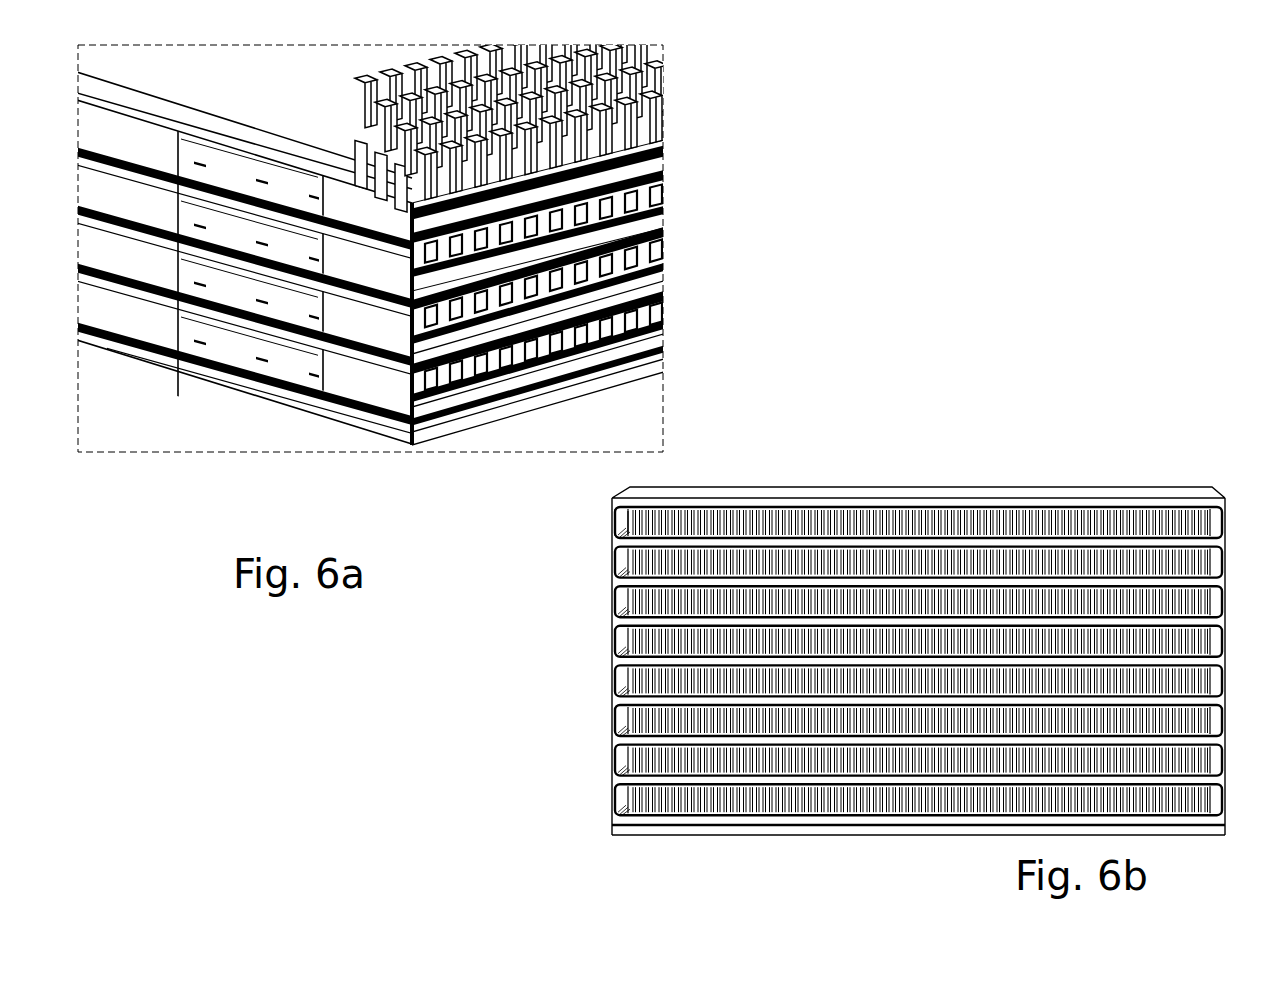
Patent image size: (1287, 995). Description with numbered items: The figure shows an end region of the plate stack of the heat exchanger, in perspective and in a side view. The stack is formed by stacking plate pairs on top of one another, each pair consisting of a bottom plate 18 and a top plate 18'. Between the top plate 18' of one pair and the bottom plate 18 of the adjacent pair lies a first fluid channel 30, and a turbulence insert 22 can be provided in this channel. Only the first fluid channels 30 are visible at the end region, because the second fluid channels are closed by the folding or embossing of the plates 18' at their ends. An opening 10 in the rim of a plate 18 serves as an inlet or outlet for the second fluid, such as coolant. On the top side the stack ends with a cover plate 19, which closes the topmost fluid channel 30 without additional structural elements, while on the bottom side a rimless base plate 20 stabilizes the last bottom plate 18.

In FIG. 6A, the opening 10 is at (242, 337).
In FIG. 6A, the plate 18 is at (244, 327).
In FIG. 6A, the plate 18' is at (593, 270).
In FIG. 6B, the cover plate 19 is at (928, 502).
In FIG. 6A, the base plate 20 is at (457, 432).
In FIG. 6B, the base plate 20 is at (938, 826).
In FIG. 6A, the turbulence insert 22 is at (657, 124).
In FIG. 6B, the turbulence insert 22 is at (800, 817).
In FIG. 6B, the first fluid channel 30 is at (636, 512).